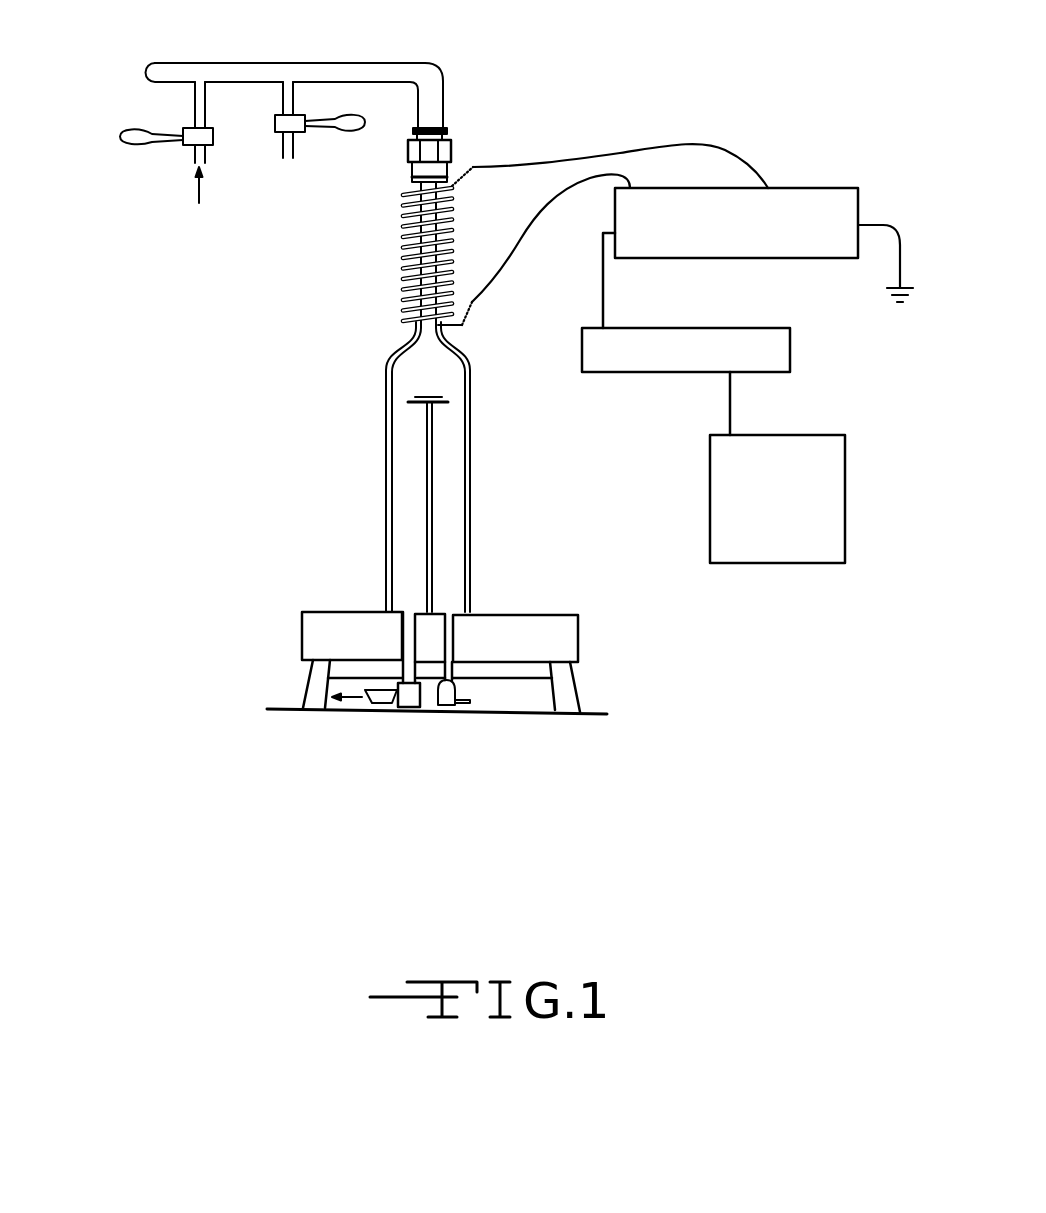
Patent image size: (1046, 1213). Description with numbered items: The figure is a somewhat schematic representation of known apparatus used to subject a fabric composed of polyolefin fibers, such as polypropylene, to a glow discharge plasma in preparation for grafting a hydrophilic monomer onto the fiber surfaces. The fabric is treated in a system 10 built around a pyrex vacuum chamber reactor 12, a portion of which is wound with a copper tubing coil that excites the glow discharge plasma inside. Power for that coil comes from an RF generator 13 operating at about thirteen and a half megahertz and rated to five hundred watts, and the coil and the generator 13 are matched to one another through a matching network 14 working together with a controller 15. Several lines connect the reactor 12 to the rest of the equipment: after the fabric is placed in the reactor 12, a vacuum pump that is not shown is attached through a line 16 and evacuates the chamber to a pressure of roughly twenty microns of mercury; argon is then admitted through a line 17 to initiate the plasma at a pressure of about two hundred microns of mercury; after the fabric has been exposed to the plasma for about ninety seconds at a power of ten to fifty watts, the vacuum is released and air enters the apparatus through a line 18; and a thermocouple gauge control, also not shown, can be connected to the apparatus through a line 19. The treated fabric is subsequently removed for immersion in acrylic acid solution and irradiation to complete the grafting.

The system 10 is at (542, 110).
The vacuum chamber reactor 12 is at (468, 478).
The RF generator 13 is at (710, 507).
The matching network 14 is at (827, 188).
The controller 15 is at (582, 340).
The line 16 is at (382, 703).
The line 17 is at (195, 108).
The line 18 is at (292, 143).
The line 19 is at (437, 700).